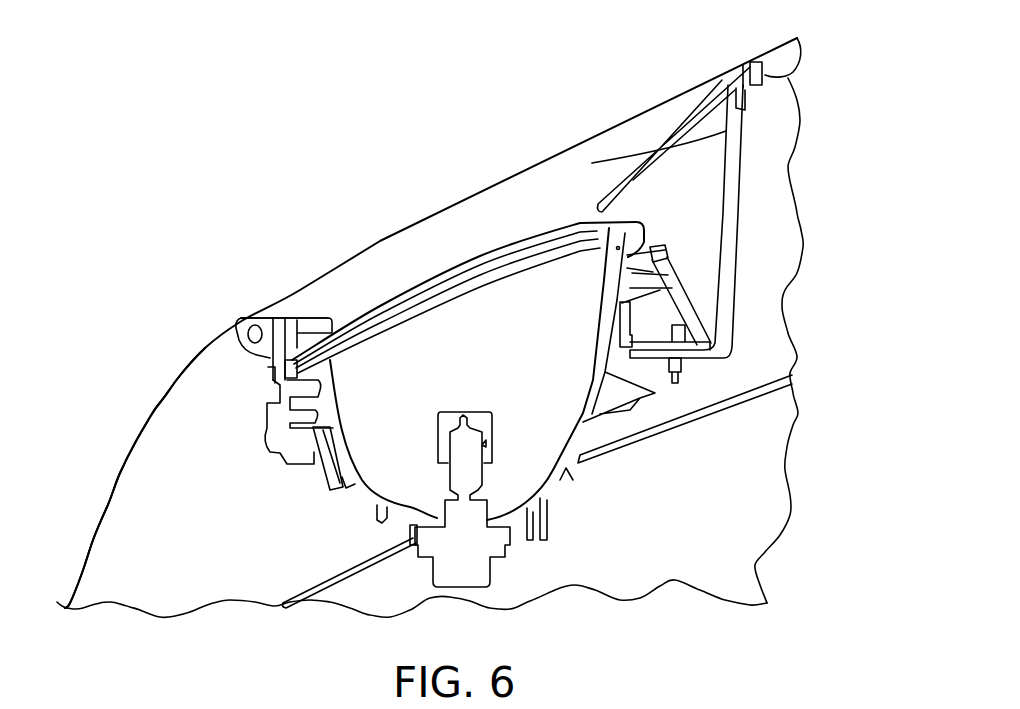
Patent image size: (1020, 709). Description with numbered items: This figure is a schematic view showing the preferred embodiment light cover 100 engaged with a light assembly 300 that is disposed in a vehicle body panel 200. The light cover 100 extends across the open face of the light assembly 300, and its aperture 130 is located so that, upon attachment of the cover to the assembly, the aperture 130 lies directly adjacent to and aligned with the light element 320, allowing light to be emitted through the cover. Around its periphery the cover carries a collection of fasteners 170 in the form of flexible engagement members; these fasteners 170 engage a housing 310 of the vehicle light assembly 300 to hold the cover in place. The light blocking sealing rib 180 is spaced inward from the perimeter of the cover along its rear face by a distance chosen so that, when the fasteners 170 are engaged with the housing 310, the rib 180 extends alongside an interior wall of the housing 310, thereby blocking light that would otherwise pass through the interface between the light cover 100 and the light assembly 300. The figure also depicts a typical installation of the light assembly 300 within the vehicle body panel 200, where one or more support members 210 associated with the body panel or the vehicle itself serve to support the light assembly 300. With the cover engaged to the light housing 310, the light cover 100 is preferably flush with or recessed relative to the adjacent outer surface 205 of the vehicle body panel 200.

The light cover 100 is at (663, 143).
The aperture 130 is at (593, 213).
The fastener 170 is at (796, 68).
The light blocking sealing rib 180 is at (698, 112).
The vehicle body panel 200 is at (783, 42).
The outer surface 205 is at (177, 380).
The support member 210 is at (742, 397).
The light assembly 300 is at (496, 348).
The housing 310 is at (733, 228).
The light element 320 is at (472, 477).